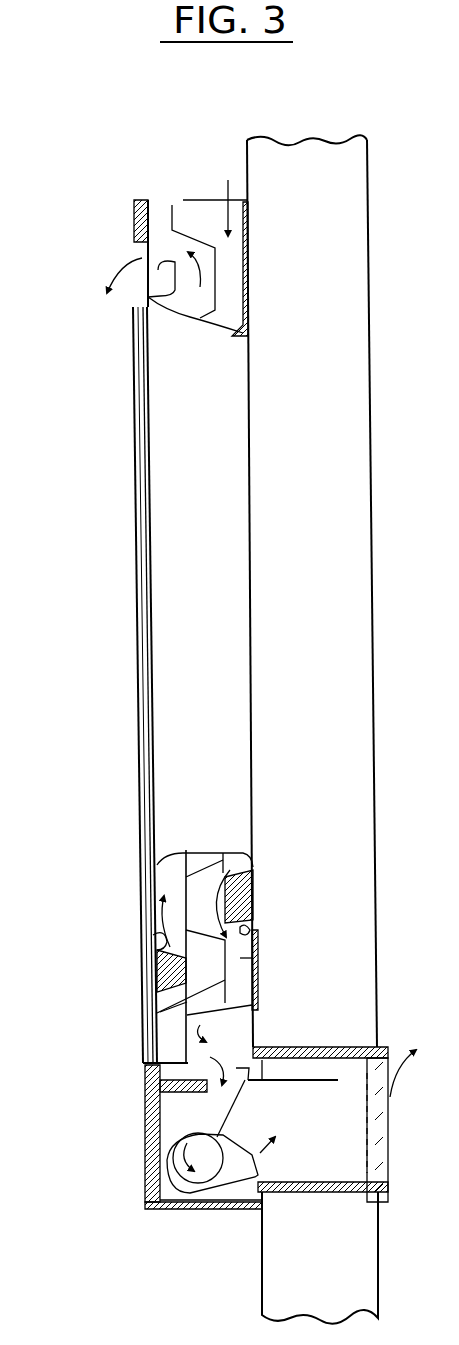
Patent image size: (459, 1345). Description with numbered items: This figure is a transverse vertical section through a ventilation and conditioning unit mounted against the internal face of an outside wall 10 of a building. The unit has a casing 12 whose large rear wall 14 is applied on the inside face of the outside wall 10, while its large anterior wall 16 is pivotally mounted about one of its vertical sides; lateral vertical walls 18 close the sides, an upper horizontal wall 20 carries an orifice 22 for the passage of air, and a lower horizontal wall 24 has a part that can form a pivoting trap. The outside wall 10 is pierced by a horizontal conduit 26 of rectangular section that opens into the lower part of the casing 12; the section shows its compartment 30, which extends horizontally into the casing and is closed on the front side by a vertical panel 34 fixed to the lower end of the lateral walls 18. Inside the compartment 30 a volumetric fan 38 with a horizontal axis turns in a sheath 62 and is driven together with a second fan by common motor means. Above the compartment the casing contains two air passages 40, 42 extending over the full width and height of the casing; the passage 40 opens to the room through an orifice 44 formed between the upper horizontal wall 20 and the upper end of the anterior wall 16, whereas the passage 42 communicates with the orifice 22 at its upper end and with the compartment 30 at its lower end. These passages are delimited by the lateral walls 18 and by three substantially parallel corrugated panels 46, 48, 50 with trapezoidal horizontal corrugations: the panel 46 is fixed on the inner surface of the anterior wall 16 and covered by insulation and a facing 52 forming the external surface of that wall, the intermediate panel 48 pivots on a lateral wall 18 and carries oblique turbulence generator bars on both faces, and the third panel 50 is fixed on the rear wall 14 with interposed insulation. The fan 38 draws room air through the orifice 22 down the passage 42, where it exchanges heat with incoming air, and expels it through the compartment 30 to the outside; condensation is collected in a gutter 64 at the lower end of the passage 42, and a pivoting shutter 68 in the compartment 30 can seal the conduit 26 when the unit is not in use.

The outside wall 10 is at (333, 500).
The casing 12 is at (113, 685).
The rear wall 14 is at (262, 873).
The anterior wall 16 is at (135, 648).
The lateral vertical walls 18 is at (178, 495).
The upper horizontal wall 20 is at (147, 192).
The orifice 22 is at (205, 202).
The lower horizontal wall 24 is at (238, 1212).
The horizontal conduit 26 is at (337, 1045).
The compartment 30 is at (330, 1160).
The vertical panel 34 is at (142, 1172).
The fan 38 is at (173, 1138).
The air passage 40 is at (140, 872).
The air passage 42 is at (258, 957).
The orifice 44 is at (140, 253).
The corrugated panel 46 is at (143, 928).
The intermediate panel 48 is at (160, 1012).
The third panel 50 is at (258, 937).
The facing 52 is at (137, 583).
The sheath 62 is at (182, 1212).
The gutter 64 is at (170, 1099).
The pivoting shutter 68 is at (312, 1083).